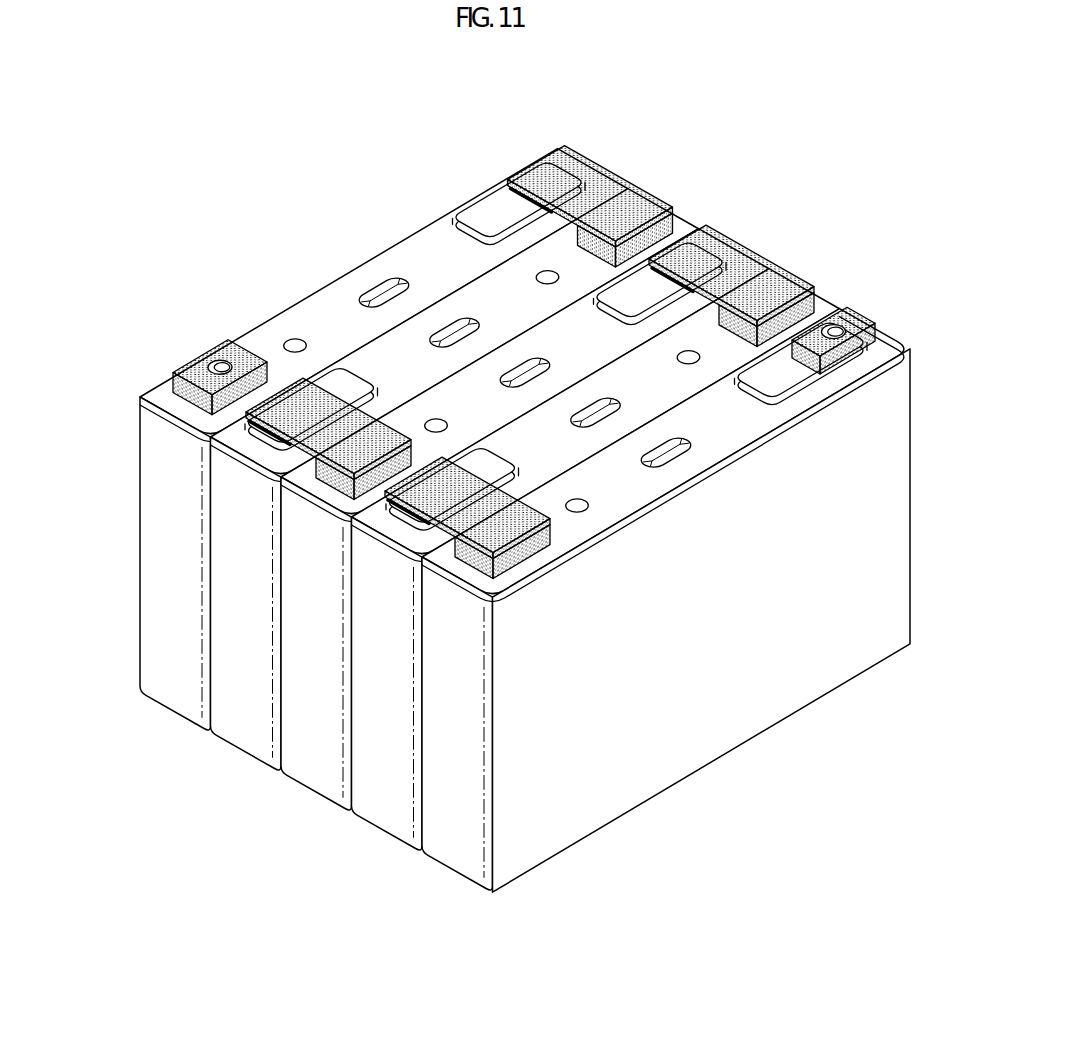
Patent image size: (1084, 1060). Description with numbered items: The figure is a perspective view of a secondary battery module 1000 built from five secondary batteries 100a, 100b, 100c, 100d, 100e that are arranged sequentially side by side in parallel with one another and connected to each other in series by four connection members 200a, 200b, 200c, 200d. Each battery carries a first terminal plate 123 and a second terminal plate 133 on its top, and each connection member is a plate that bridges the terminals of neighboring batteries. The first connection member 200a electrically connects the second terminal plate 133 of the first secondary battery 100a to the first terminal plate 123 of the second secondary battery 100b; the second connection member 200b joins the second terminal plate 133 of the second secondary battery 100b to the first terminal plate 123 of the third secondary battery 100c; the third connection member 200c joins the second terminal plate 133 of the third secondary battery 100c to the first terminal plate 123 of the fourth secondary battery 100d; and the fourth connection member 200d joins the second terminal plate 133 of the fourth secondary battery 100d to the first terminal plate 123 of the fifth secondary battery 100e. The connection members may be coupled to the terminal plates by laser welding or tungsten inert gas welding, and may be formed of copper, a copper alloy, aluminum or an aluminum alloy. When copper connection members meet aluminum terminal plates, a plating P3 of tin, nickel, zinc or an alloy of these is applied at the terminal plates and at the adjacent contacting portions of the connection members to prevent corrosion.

The secondary battery module 1000 is at (284, 183).
The first secondary battery 100a is at (455, 852).
The second secondary battery 100b is at (385, 813).
The third secondary battery 100c is at (315, 775).
The fourth secondary battery 100d is at (245, 735).
The fifth secondary battery 100e is at (175, 700).
The first terminal plate 123 is at (503, 195).
The second terminal plate 133 is at (173, 372).
The first connection member 200a is at (548, 509).
The second connection member 200b is at (773, 287).
The third connection member 200c is at (293, 393).
The fourth connection member 200d is at (605, 185).
The plating P3 is at (518, 459).